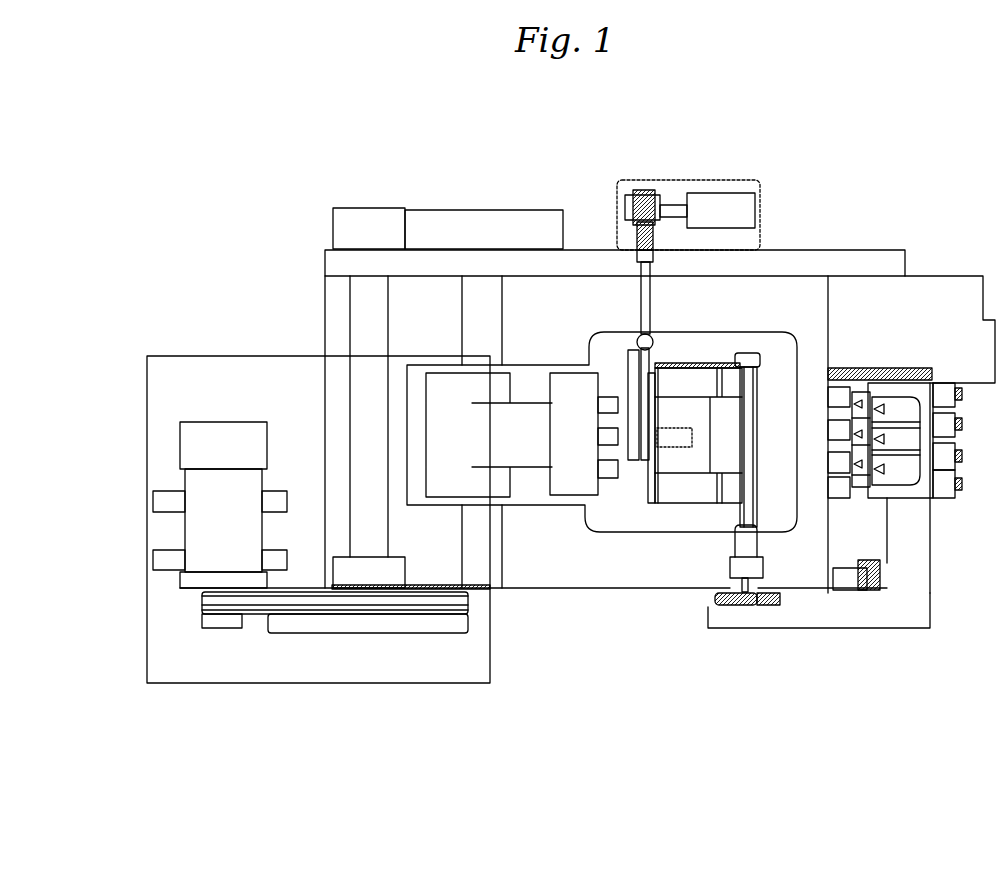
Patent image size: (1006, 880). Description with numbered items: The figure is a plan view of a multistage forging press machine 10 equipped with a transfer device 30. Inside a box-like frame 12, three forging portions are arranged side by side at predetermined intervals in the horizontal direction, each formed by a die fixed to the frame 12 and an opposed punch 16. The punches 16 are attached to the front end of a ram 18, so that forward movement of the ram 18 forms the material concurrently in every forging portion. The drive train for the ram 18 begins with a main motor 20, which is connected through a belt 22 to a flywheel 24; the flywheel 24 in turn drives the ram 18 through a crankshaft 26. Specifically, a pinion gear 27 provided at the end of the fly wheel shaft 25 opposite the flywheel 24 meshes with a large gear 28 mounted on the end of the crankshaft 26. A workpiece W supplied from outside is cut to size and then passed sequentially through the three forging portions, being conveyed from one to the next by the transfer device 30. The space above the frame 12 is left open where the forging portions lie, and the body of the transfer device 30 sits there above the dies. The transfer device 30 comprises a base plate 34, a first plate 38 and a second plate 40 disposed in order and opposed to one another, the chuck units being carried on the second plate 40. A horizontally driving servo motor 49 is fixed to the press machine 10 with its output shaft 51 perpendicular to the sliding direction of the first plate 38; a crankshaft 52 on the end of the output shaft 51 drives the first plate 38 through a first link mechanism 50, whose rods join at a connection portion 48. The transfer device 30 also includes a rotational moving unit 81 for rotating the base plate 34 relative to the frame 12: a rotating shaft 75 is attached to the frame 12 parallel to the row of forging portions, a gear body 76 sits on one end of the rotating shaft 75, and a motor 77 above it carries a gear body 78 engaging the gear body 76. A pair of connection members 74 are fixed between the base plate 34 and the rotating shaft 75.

The multistage forging press machine 10 is at (862, 175).
The frame 12 is at (786, 297).
The punch 16 is at (610, 390).
The ram 18 is at (561, 482).
The main motor 20 is at (198, 523).
The belt 22 is at (261, 620).
The flywheel 24 is at (388, 640).
The fly wheel shaft 25 is at (360, 317).
The crankshaft 26 is at (479, 383).
The pinion gear 27 is at (366, 218).
The large gear 28 is at (475, 222).
The transfer device 30 is at (664, 516).
The base plate 34 is at (665, 358).
The first plate 38 is at (657, 352).
The second plate 40 is at (616, 348).
The connection portion 48 is at (634, 333).
The horizontally driving servo motor 49 is at (720, 200).
The first link mechanism 50 is at (619, 244).
The output shaft 51 is at (668, 203).
The crankshaft 52 is at (655, 188).
The connection member 74 is at (702, 365).
The rotating shaft 75 is at (757, 433).
The gear body 76 is at (764, 604).
The motor 77 is at (748, 541).
The gear body 78 is at (751, 604).
The rotational moving unit 81 is at (797, 601).
The workpiece W is at (905, 368).